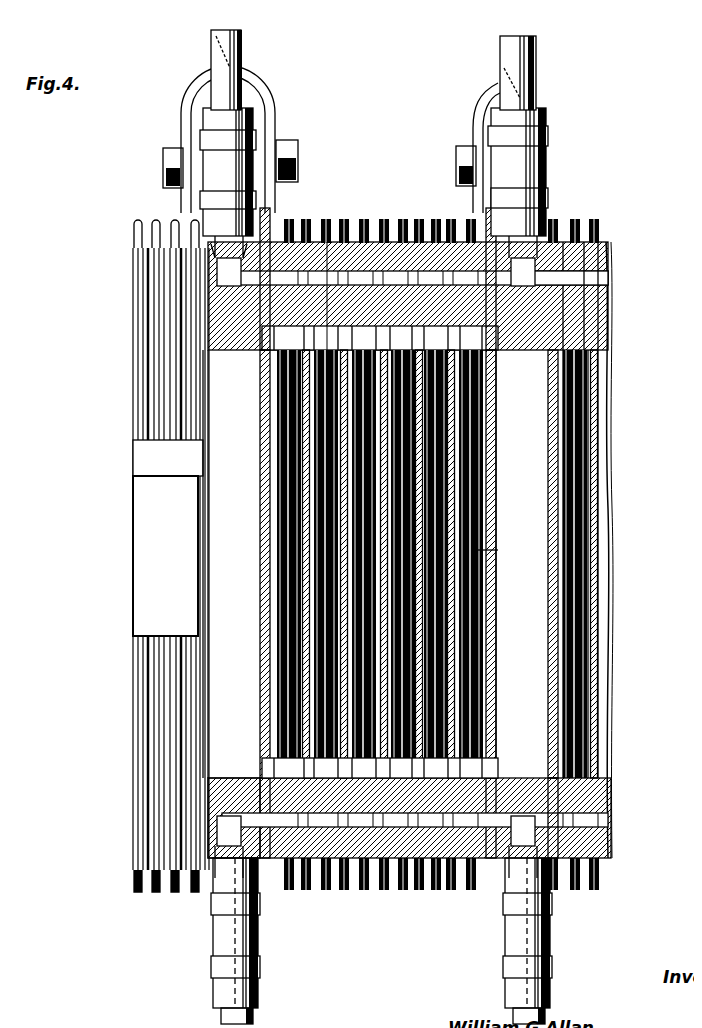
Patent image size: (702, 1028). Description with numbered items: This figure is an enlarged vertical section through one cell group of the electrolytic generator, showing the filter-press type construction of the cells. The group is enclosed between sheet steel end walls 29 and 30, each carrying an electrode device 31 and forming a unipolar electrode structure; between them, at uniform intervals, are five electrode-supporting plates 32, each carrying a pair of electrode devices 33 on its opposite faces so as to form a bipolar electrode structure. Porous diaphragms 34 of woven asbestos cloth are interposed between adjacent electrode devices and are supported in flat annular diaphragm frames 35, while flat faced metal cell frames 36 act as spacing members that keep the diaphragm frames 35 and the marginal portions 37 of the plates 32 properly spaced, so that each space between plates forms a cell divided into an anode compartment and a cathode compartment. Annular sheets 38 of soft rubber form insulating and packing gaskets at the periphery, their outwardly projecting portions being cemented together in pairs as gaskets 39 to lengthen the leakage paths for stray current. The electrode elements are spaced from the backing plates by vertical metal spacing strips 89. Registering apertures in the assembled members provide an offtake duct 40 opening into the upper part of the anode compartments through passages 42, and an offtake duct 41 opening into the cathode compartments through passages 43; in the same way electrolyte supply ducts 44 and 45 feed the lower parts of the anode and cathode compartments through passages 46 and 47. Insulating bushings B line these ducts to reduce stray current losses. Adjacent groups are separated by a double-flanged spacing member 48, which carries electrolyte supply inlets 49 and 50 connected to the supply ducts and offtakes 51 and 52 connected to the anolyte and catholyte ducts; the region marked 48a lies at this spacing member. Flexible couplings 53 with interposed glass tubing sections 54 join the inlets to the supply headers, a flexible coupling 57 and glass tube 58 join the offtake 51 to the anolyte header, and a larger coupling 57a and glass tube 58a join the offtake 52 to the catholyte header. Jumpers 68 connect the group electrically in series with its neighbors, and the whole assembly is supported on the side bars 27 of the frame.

The side bars 27 is at (130, 520).
The end wall 29 is at (488, 358).
The end wall 30 is at (256, 374).
The electrode device 31 is at (270, 406).
The electrode-supporting plate 32 is at (320, 428).
The electrode device 33 is at (345, 452).
The porous diaphragm 34 is at (300, 480).
The diaphragm frame 35 is at (312, 240).
The cell frame 36 is at (283, 240).
The marginal portion 37 is at (320, 240).
The annular sheet 38 is at (270, 770).
The gasket 39 is at (136, 878).
The offtake duct 40 is at (205, 300).
The offtake duct 41 is at (560, 272).
The passage 42 is at (270, 336).
The passage 43 is at (575, 305).
The electrolyte supply duct 44 is at (585, 814).
The electrolyte supply duct 45 is at (412, 862).
The passage 46 is at (585, 780).
The passage 47 is at (376, 862).
The spacing member 48 is at (222, 790).
The spacer 48a is at (252, 602).
The electrolyte supply inlet 49 is at (512, 848).
The electrolyte supply inlet 50 is at (210, 822).
The offtake 51 is at (210, 268).
The offtake 52 is at (576, 240).
The flexible coupling 53 is at (214, 932).
The glass tubing section 54 is at (248, 1004).
The flexible coupling 57 is at (212, 118).
The flexible coupling 57a is at (500, 152).
The glass tube 58 is at (212, 44).
The glass tube 58a is at (500, 40).
The jumper 68 is at (246, 104).
The spacing strip 89 is at (470, 552).
The insulating bushing B is at (570, 244).